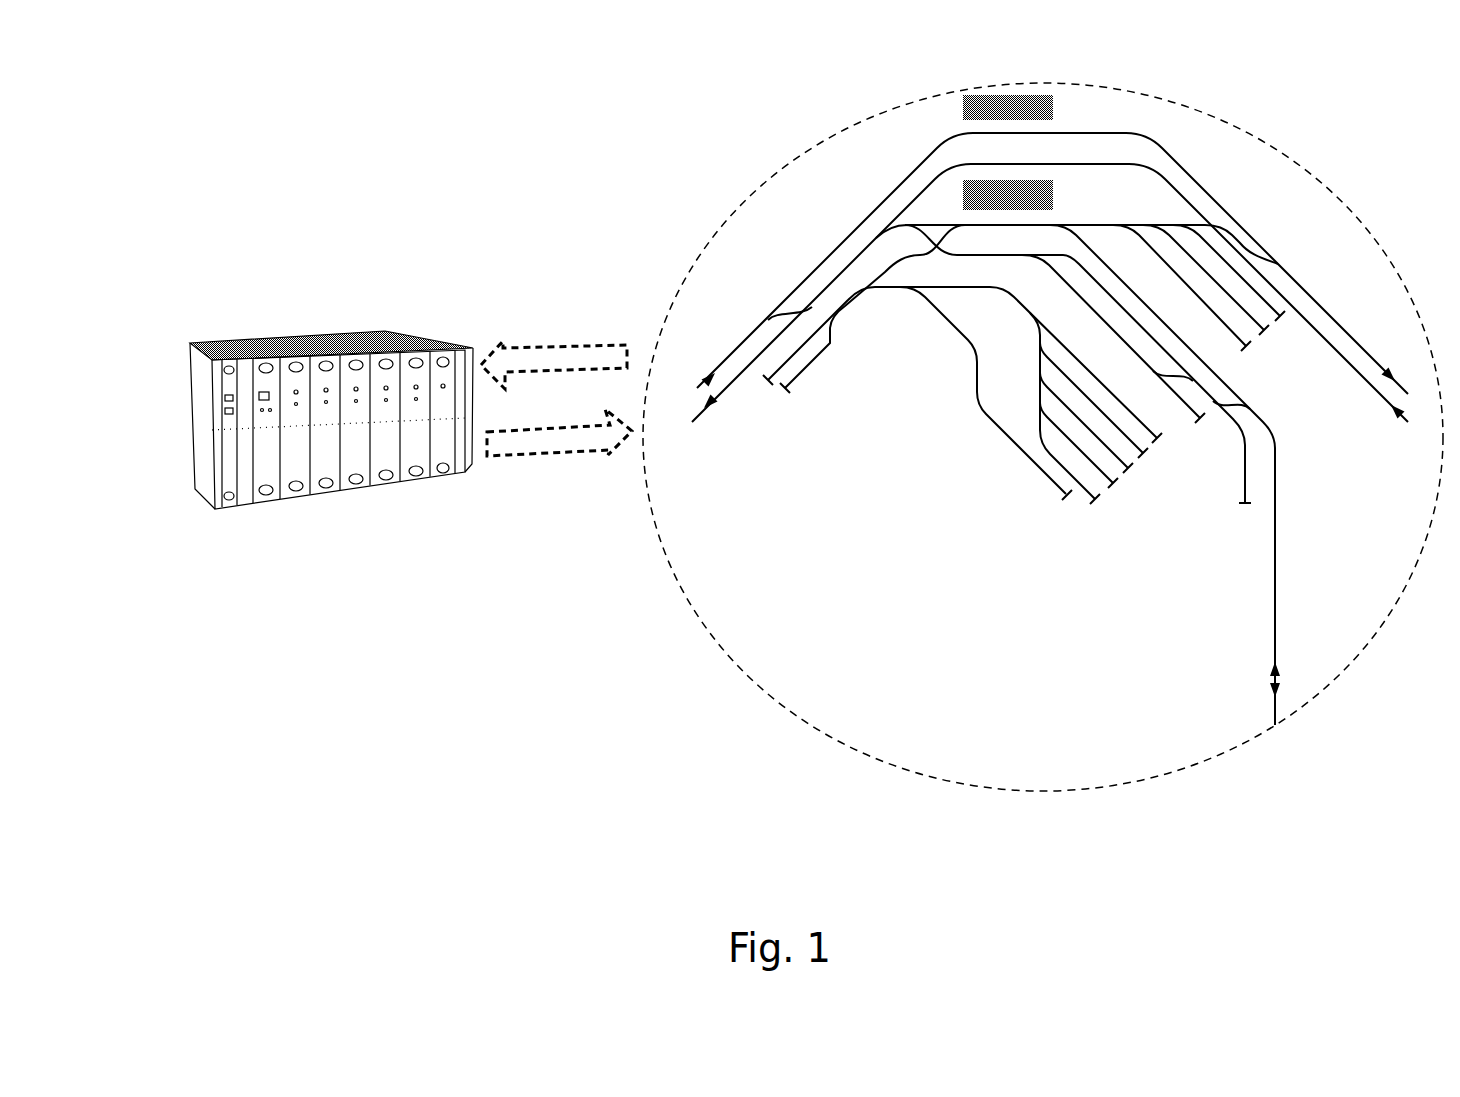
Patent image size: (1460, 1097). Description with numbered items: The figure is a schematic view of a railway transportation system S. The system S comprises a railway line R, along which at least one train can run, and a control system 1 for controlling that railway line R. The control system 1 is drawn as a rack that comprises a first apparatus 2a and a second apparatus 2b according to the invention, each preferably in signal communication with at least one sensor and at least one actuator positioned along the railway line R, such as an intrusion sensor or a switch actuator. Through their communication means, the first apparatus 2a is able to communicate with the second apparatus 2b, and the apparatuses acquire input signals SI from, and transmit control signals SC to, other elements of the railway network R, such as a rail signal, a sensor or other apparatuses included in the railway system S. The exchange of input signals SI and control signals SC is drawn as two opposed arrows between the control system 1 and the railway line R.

The railway transportation system S is at (217, 142).
The control system 1 is at (190, 342).
The first apparatus 2a is at (237, 452).
The second apparatus 2b is at (270, 480).
The input signals SI is at (563, 347).
The control signals SC is at (547, 450).
The railway line R is at (1360, 682).